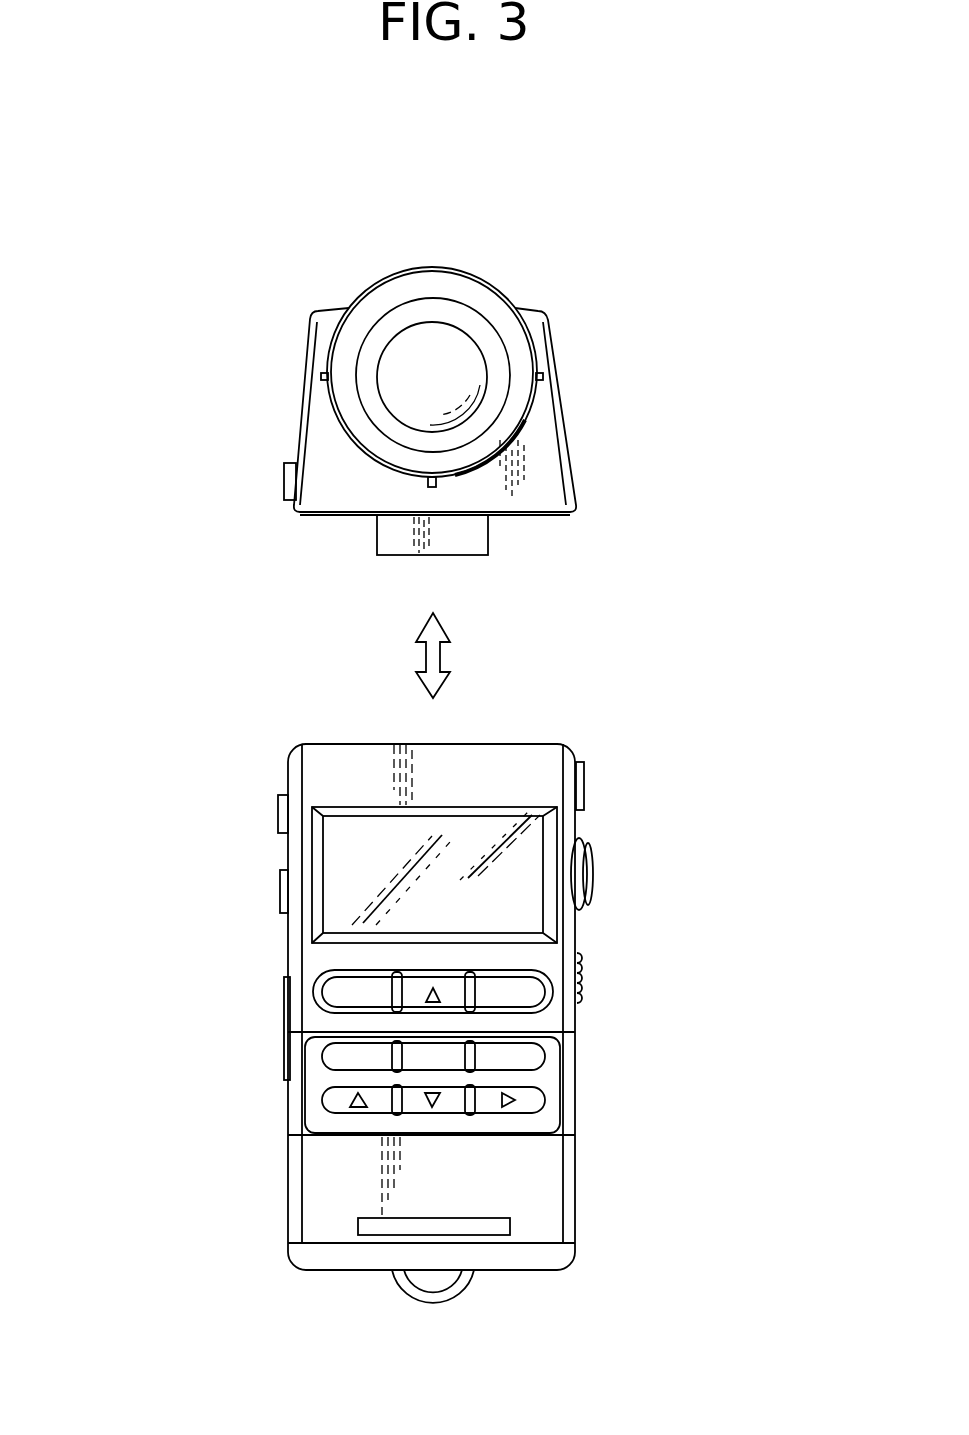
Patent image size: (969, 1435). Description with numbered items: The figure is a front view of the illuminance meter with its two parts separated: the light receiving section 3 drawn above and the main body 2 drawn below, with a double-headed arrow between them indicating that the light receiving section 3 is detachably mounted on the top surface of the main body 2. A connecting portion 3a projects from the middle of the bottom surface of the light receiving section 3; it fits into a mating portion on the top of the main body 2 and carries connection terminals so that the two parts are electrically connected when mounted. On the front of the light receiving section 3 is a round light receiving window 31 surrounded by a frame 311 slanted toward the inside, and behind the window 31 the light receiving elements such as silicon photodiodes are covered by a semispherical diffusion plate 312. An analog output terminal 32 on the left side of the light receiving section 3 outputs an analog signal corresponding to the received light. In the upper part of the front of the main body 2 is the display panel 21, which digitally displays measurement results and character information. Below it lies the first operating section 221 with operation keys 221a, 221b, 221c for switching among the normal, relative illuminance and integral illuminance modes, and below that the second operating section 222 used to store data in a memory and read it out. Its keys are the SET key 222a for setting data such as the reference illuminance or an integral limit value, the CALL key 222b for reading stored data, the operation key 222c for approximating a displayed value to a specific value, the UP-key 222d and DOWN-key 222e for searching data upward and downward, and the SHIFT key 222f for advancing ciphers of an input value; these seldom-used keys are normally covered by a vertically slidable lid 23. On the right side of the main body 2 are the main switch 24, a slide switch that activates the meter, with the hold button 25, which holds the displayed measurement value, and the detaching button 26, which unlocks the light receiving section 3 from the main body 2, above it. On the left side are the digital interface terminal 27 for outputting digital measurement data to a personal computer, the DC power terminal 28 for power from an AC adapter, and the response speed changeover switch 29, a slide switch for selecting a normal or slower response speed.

The main body 2 is at (578, 1223).
The light receiving section 3 is at (563, 390).
The connecting portion 3a is at (488, 538).
The light receiving window 31 is at (458, 262).
The frame 311 is at (510, 333).
The semispherical diffusion plate 312 is at (430, 358).
The analog output terminal 32 is at (284, 483).
The display panel 21 is at (358, 858).
The lid 23 is at (313, 1215).
The main switch 24 is at (583, 957).
The hold button 25 is at (594, 865).
The detaching button 26 is at (584, 793).
The digital interface terminal 27 is at (284, 1050).
The DC power terminal 28 is at (280, 895).
The response speed changeover switch 29 is at (278, 817).
The first operating section 221 is at (294, 990).
The operation key 221a is at (323, 995).
The operation key 221b is at (427, 973).
The operation key 221c is at (497, 973).
The second operating section 222 is at (558, 1090).
The SET key 222a is at (433, 1045).
The CALL key 222b is at (385, 1033).
The operation key 222c is at (547, 1053).
The UP-key 222d is at (353, 1113).
The DOWN-key 222e is at (433, 1113).
The SHIFT key 222f is at (503, 1113).